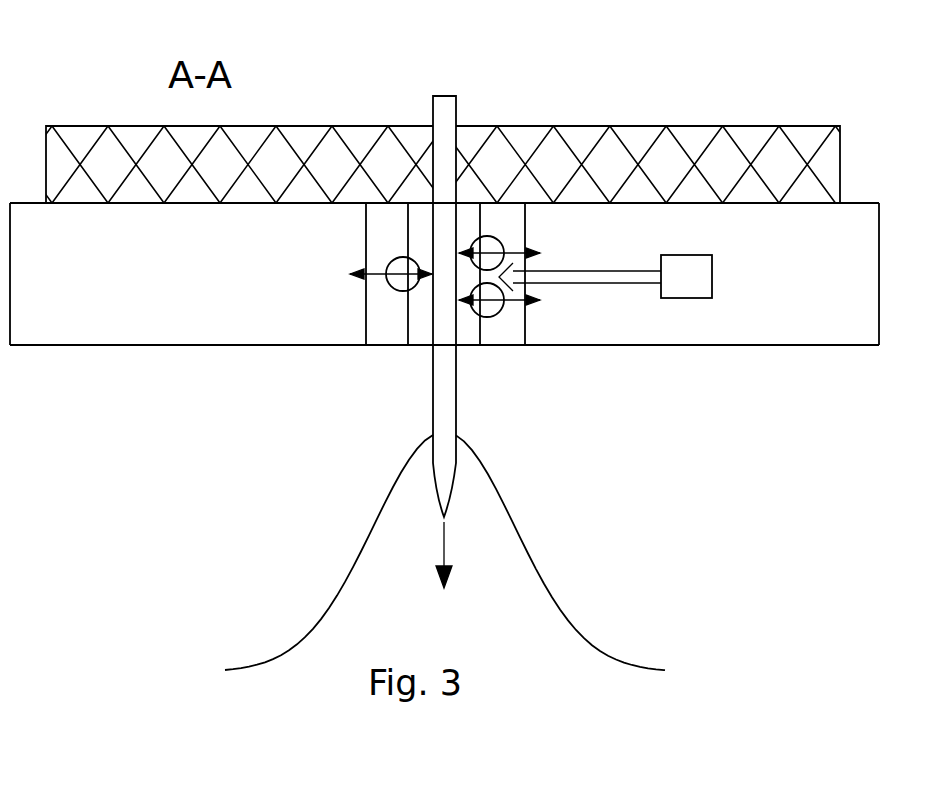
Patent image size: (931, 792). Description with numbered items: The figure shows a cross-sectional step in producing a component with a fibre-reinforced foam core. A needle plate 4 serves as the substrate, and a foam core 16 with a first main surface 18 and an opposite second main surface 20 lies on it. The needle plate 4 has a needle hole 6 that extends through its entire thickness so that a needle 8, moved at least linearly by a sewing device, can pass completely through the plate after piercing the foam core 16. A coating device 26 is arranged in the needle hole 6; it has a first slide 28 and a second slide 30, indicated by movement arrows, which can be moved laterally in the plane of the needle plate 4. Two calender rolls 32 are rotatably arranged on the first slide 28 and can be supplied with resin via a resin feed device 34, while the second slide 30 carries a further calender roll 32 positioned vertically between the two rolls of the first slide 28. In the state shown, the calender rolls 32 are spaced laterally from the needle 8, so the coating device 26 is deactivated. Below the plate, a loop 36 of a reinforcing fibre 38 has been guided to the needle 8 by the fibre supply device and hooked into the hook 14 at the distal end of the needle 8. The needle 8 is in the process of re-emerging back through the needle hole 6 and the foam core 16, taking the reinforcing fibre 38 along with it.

The needle plate 4 is at (795, 330).
The needle hole 6 is at (420, 338).
The needle 8 is at (457, 412).
The hook 14 is at (423, 560).
The foam core 16 is at (612, 152).
The first main surface 18 is at (740, 125).
The second main surface 20 is at (272, 207).
The coating device 26 is at (363, 362).
The first slide 28 is at (480, 247).
The second slide 30 is at (397, 288).
The calender rolls 32 is at (400, 282).
The resin feed device 34 is at (712, 276).
The loop 36 is at (555, 513).
The reinforcing fibre 38 is at (562, 605).